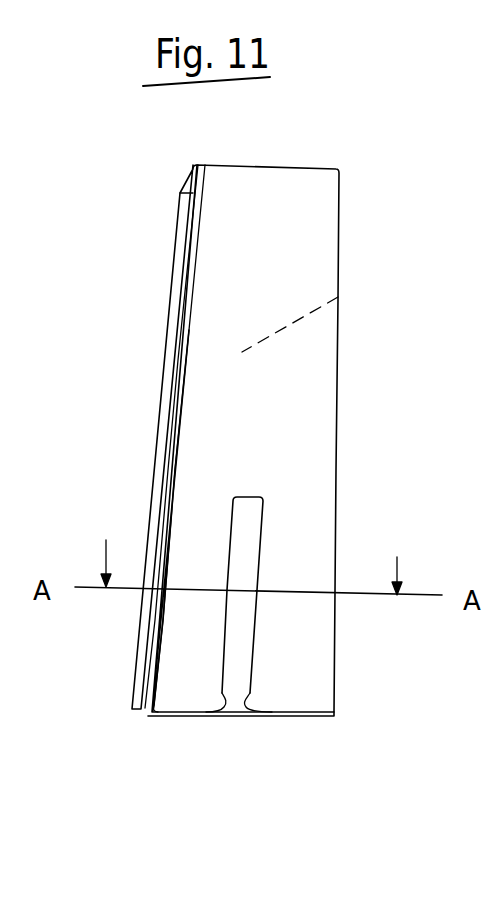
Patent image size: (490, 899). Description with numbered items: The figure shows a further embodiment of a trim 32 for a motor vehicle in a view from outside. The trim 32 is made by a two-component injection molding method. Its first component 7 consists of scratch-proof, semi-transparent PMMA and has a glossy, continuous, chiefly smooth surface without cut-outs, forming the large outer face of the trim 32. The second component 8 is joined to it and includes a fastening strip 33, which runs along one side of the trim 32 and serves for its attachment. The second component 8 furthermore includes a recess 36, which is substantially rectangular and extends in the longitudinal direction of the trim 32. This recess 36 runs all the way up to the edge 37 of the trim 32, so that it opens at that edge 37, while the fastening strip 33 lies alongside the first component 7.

The first component 7 is at (292, 276).
The second component 8 is at (338, 297).
The trim 32 is at (85, 193).
The fastening strip 33 is at (172, 331).
The recess 36 is at (248, 543).
The edge 37 is at (173, 718).